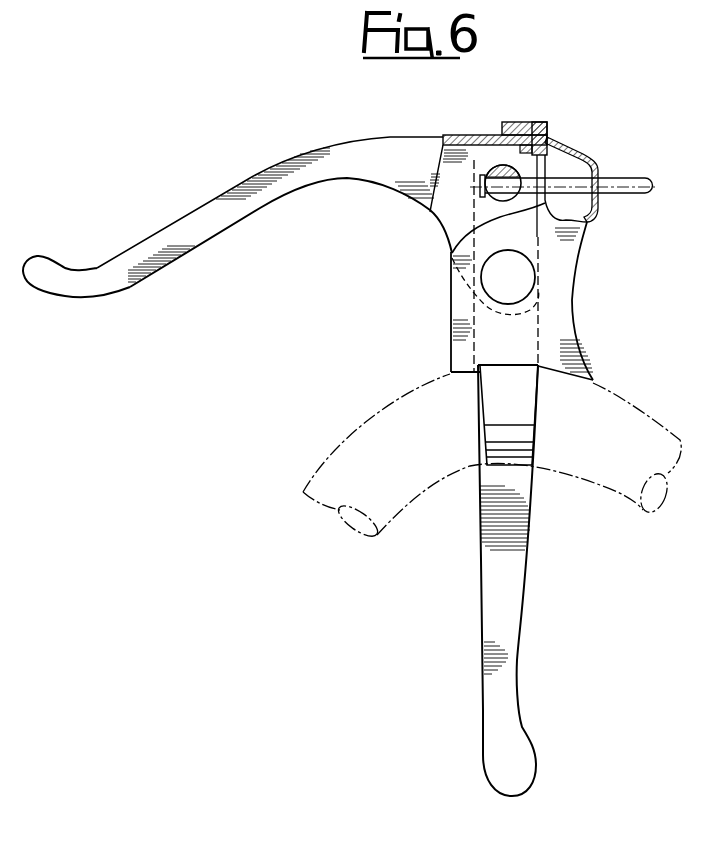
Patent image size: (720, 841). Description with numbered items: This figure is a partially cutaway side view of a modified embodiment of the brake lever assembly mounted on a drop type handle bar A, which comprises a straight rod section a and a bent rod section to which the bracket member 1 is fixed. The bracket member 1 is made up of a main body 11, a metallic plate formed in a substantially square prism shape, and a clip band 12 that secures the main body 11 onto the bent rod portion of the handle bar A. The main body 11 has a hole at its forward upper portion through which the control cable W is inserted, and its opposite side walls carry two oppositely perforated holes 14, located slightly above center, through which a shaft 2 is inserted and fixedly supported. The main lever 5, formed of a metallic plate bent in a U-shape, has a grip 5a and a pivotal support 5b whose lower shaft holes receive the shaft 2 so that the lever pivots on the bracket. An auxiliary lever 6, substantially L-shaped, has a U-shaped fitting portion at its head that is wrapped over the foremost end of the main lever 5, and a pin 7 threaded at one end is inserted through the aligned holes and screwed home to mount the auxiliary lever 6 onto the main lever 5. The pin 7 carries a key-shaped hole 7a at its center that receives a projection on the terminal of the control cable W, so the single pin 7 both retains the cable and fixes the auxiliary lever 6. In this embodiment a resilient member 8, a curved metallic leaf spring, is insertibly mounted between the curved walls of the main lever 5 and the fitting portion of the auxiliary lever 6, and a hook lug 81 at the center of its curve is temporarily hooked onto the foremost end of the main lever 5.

The bracket member 1 is at (575, 337).
The shaft 2 is at (503, 288).
The main lever 5 is at (402, 137).
The grip 5a is at (330, 152).
The pivotal support 5b is at (470, 288).
The auxiliary lever 6 is at (539, 123).
The pin 7 is at (497, 166).
The key-shaped hole 7a is at (533, 177).
The resilient member 8 is at (512, 123).
The hook lug 81 is at (549, 152).
The main body 11 is at (560, 274).
The clip band 12 is at (522, 467).
The holes 14 is at (451, 253).
The drop type handle bar A is at (643, 408).
The straight rod section a is at (430, 477).
The control cable W is at (627, 193).